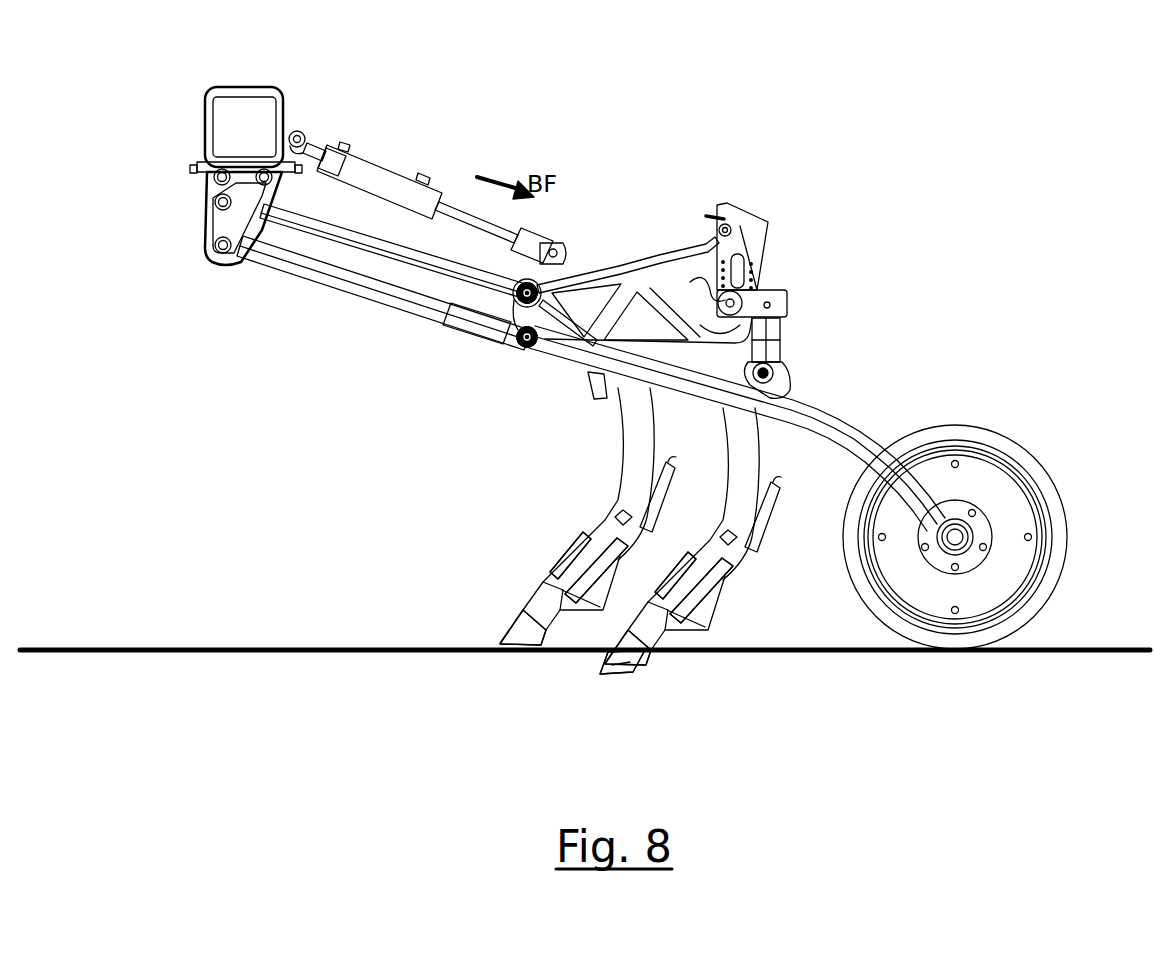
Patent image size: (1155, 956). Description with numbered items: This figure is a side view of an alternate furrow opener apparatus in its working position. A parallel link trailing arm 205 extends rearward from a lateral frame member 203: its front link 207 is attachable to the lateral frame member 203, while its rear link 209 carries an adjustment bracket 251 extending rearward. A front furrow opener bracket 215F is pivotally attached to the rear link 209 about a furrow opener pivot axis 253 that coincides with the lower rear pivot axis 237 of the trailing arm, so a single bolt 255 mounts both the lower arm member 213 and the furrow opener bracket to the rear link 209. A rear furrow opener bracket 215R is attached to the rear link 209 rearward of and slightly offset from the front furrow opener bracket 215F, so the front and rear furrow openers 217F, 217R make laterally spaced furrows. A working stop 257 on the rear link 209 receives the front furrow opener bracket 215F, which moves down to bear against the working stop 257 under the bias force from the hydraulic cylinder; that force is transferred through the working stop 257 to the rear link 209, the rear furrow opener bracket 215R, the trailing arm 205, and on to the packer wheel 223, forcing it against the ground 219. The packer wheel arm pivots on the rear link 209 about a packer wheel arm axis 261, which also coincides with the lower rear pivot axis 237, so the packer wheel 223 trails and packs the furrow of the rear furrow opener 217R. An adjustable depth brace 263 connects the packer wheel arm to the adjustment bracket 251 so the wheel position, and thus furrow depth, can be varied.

The lateral frame member 203 is at (241, 110).
The parallel link trailing arm 205 is at (260, 283).
The front link 207 is at (203, 237).
The rear link 209 is at (534, 234).
The lower arm member 213 is at (323, 290).
The front furrow opener bracket 215F is at (620, 460).
The rear furrow opener bracket 215R is at (802, 452).
The front furrow opener 217F is at (510, 629).
The rear furrow opener 217R is at (590, 662).
The ground 219 is at (270, 648).
The packer wheel 223 is at (1027, 455).
The lower rear pivot axis 237 is at (522, 348).
The adjustment bracket 251 is at (645, 255).
The furrow opener pivot axis 253 is at (527, 315).
The bolt 255 is at (527, 315).
The working stop 257 is at (607, 387).
The packer wheel arm axis 261 is at (527, 315).
The adjustable depth brace 263 is at (783, 338).